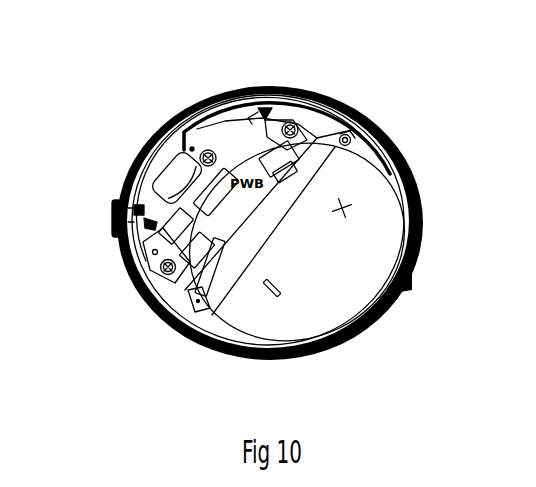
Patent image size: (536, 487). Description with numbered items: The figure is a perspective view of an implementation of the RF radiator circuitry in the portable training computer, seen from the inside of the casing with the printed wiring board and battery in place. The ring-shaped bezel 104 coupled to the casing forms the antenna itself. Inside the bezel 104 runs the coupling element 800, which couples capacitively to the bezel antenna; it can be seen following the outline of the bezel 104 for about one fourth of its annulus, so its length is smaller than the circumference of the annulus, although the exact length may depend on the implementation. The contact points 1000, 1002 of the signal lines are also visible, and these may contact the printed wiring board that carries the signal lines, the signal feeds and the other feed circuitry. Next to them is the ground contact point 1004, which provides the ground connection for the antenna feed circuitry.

The bezel 104 is at (367, 113).
The coupling element 800 is at (243, 103).
The contact point 1000 is at (190, 149).
The contact point 1002 is at (265, 113).
The ground contact point 1004 is at (352, 134).